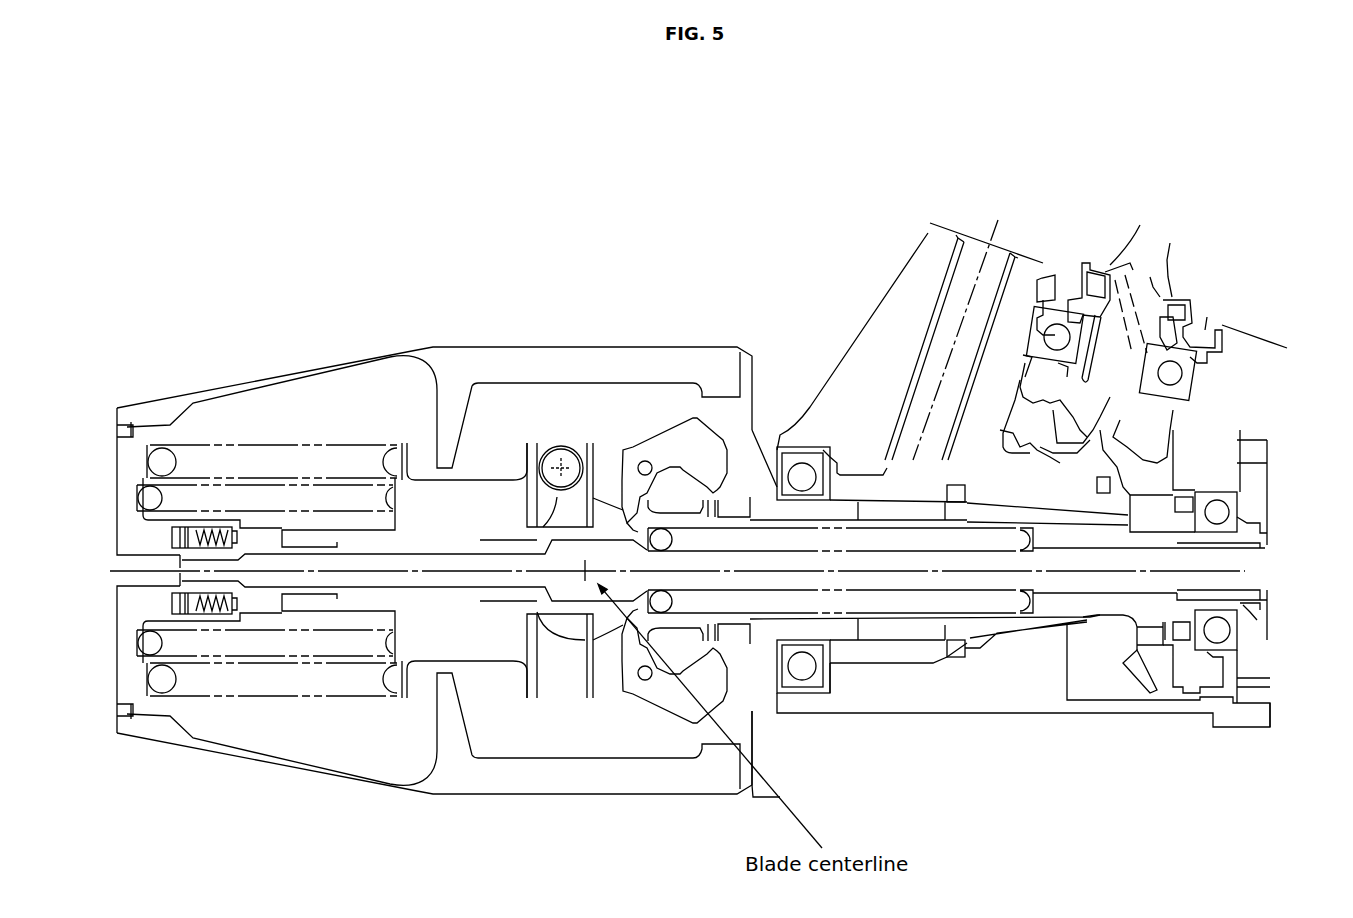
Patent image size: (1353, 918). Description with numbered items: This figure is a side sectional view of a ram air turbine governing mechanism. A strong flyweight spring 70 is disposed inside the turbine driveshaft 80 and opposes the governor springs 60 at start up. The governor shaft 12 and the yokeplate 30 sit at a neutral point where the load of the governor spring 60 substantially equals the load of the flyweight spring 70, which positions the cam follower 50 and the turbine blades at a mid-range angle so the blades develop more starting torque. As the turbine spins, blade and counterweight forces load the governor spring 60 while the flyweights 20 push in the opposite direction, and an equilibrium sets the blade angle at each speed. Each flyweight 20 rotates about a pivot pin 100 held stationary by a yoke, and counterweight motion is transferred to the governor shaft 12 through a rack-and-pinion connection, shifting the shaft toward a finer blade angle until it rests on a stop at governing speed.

The governor shaft 12 is at (256, 614).
The flyweight 20 is at (716, 419).
The yokeplate 30 is at (477, 684).
The cam follower 50 is at (559, 432).
The governor spring 60 is at (280, 472).
The flyweight spring 70 is at (876, 622).
The turbine driveshaft 80 is at (1088, 633).
The pivot pin 100 is at (651, 447).